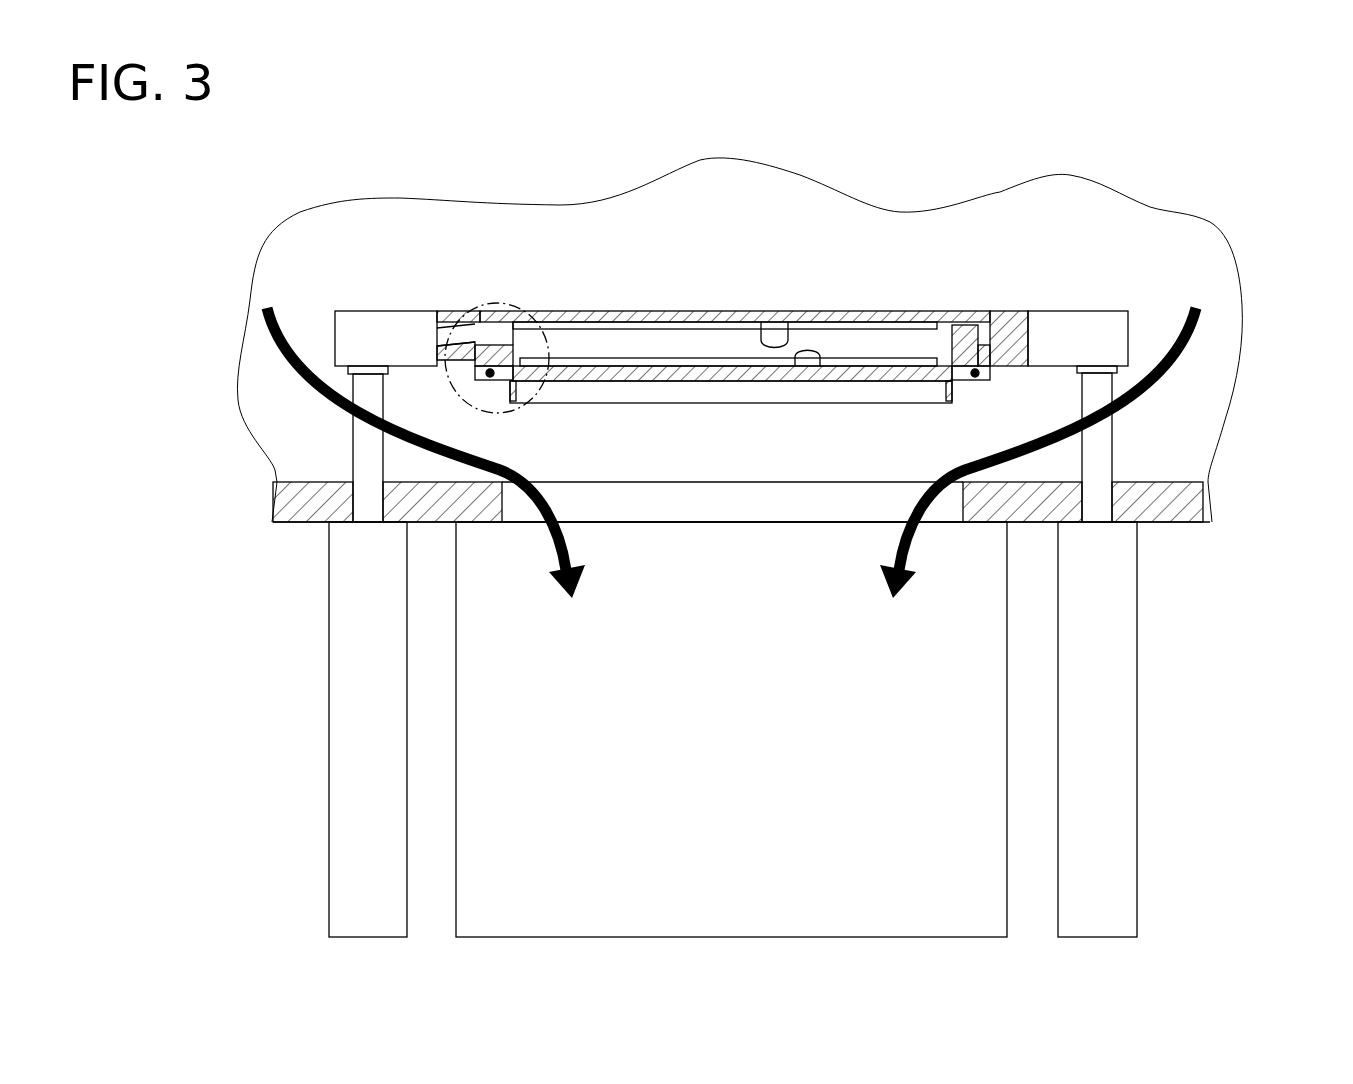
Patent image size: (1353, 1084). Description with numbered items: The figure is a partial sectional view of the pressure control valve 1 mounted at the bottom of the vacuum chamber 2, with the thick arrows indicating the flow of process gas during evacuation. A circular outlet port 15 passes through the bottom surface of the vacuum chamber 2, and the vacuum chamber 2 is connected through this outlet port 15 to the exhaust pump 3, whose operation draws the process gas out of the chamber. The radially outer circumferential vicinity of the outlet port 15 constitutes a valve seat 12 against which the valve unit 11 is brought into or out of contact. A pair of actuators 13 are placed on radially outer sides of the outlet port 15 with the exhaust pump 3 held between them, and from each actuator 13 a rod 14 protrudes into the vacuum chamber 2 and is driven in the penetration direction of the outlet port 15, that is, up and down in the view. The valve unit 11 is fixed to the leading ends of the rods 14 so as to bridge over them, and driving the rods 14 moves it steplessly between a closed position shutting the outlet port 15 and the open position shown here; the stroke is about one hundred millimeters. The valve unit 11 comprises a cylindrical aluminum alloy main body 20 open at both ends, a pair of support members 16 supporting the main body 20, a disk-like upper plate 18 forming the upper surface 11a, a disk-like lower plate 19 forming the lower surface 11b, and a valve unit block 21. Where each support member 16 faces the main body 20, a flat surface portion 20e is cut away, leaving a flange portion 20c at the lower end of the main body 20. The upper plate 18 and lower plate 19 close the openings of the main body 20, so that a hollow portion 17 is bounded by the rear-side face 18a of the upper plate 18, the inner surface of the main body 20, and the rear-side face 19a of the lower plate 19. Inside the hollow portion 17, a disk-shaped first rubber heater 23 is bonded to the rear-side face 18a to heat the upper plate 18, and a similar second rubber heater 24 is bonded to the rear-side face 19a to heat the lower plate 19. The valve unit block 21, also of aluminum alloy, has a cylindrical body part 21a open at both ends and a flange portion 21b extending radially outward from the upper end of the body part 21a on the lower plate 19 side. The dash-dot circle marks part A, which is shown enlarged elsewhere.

The pressure control valve 1 is at (1195, 609).
The vacuum chamber 2 is at (727, 223).
The exhaust pump 3 is at (1005, 768).
The valve unit 11 is at (1046, 298).
The upper surface 11a is at (720, 311).
The lower surface 11b is at (738, 381).
The valve seat 12 is at (1030, 480).
The actuator 13 is at (340, 714).
The rod 14 is at (360, 452).
The outlet port 15 is at (502, 509).
The support member 16 is at (352, 311).
The hollow portion 17 is at (577, 322).
The upper plate 18 is at (865, 311).
The rear-side face of upper plate 18a is at (772, 311).
The lower plate 19 is at (885, 382).
The rear-side face of lower plate 19a is at (808, 382).
The main body 20 is at (963, 325).
The flange portion 20c is at (445, 320).
The flat surface portion 20e is at (462, 345).
The valve unit block 21 is at (620, 388).
The body part 21a is at (512, 397).
The flange portion 21b is at (487, 385).
The first rubber heater 23 is at (633, 311).
The second rubber heater 24 is at (677, 362).
The part A is at (500, 305).